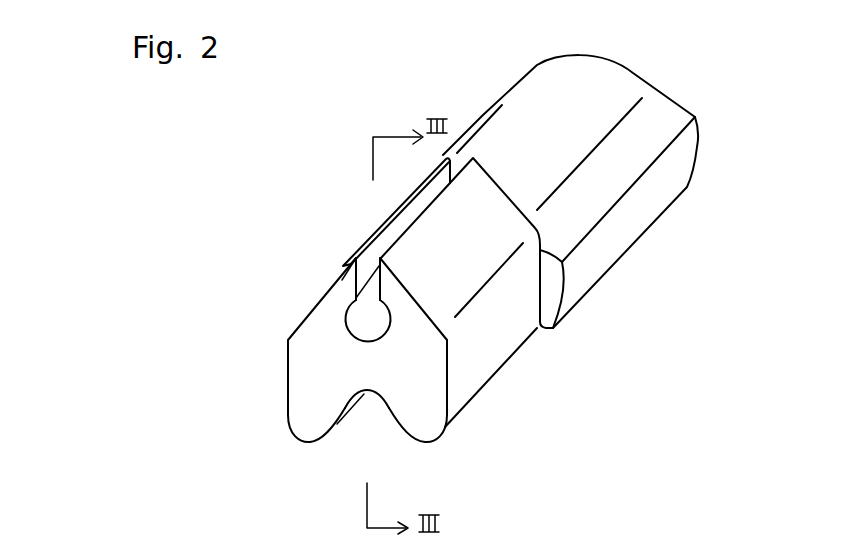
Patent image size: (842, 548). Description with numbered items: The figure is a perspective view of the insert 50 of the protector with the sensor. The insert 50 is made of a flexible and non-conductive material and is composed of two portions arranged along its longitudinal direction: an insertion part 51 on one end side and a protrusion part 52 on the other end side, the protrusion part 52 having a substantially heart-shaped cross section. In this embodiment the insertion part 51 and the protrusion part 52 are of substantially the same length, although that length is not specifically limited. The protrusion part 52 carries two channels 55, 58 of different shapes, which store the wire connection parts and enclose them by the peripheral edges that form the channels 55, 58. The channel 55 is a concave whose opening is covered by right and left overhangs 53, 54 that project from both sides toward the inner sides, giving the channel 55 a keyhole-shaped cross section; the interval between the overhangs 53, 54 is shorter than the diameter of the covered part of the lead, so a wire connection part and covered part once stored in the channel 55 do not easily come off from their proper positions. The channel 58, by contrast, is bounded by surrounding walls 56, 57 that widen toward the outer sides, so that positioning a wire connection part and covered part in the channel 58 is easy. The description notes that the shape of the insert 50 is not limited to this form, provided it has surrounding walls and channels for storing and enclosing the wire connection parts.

The insert 50 is at (710, 87).
The insertion part 51 is at (625, 237).
The protrusion part 52 is at (503, 345).
The overhang 53 is at (350, 278).
The overhang 54 is at (383, 279).
The channel 55 is at (352, 334).
The surrounding wall 56 is at (312, 430).
The surrounding wall 57 is at (425, 428).
The channel 58 is at (364, 404).